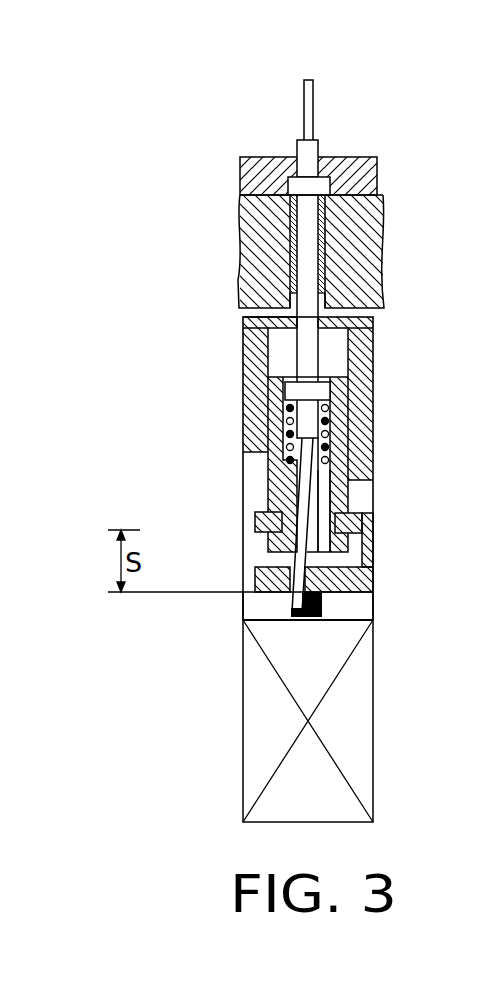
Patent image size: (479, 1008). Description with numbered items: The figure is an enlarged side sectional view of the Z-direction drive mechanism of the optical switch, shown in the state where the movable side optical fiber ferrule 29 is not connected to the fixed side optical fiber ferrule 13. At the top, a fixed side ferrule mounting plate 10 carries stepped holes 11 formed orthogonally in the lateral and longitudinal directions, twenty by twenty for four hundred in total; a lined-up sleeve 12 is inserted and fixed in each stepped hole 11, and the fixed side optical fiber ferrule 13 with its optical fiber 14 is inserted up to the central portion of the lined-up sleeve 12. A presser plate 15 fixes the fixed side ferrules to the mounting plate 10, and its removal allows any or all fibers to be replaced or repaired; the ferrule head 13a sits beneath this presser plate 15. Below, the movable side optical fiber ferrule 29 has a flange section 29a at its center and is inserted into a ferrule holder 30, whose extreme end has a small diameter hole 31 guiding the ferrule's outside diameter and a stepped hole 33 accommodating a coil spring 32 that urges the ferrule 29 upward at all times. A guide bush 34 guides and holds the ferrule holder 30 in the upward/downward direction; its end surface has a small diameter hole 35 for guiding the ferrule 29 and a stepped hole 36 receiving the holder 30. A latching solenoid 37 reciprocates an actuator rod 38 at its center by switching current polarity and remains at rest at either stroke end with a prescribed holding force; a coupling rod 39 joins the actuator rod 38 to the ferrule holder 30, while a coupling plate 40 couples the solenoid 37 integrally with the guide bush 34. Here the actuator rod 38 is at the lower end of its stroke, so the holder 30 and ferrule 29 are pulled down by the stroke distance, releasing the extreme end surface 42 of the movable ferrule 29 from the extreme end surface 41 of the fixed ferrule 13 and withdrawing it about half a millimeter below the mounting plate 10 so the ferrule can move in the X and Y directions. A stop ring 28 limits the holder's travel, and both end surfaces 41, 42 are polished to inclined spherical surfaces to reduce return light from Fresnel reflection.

The fixed side ferrule mounting plate 10 is at (250, 240).
The stepped hole 11 is at (316, 224).
The lined-up sleeve 12 is at (290, 207).
The fixed side optical fiber ferrule 13 is at (290, 182).
The head of operating rod 13a is at (311, 184).
The optical fiber 14 is at (313, 90).
The presser plate 15 is at (355, 181).
The stopper flange 28 is at (270, 552).
The movable side optical fiber ferrule 29 is at (306, 348).
The flange section 29a is at (374, 408).
The ferrule holder 30 is at (270, 490).
The small diameter hole 31 is at (300, 388).
The coil spring 32 is at (330, 453).
The stepped hole 33 is at (327, 482).
The guide bush 34 is at (378, 322).
The small diameter hole 35 is at (243, 327).
The stepped hole 36 is at (345, 355).
The latching solenoid 37 is at (374, 752).
The actuator rod 38 is at (323, 610).
The coupling rod 39 is at (365, 568).
The coupling plate 40 is at (362, 607).
The extreme end surface 41 is at (303, 273).
The extreme end surface 42 is at (290, 294).